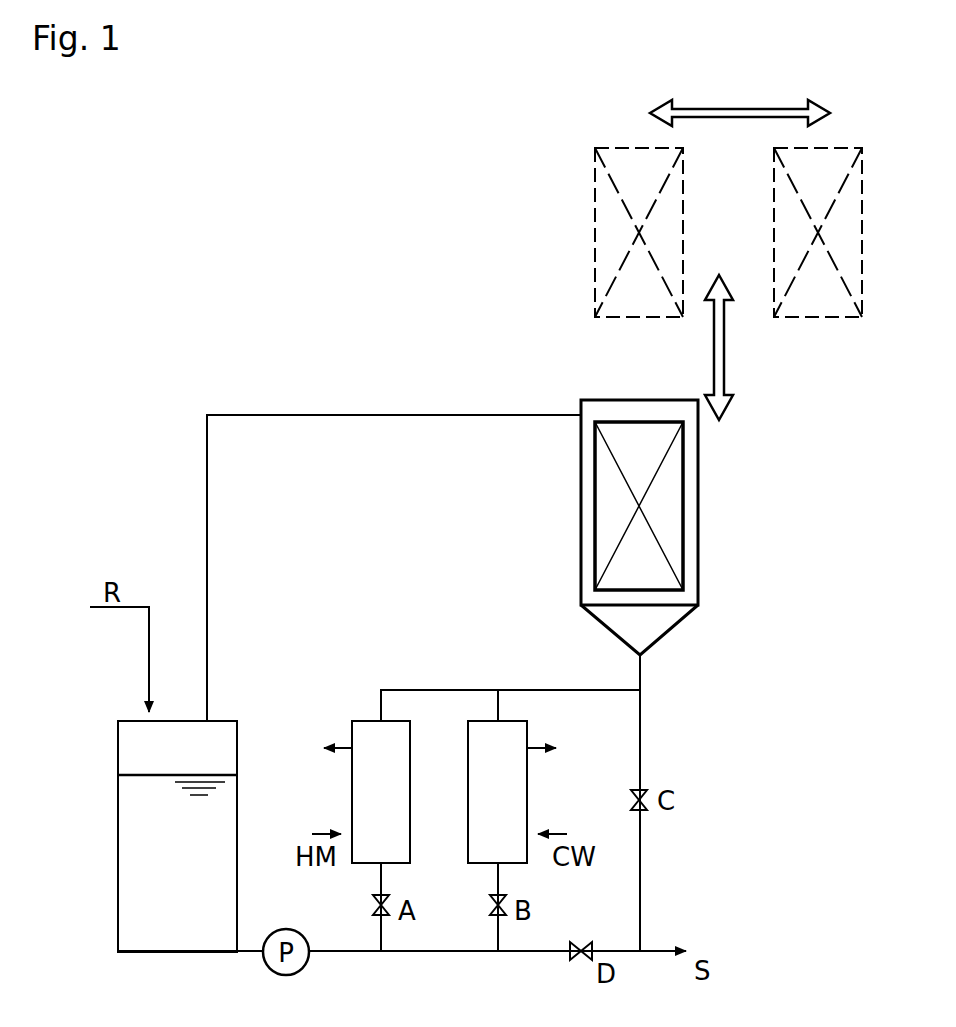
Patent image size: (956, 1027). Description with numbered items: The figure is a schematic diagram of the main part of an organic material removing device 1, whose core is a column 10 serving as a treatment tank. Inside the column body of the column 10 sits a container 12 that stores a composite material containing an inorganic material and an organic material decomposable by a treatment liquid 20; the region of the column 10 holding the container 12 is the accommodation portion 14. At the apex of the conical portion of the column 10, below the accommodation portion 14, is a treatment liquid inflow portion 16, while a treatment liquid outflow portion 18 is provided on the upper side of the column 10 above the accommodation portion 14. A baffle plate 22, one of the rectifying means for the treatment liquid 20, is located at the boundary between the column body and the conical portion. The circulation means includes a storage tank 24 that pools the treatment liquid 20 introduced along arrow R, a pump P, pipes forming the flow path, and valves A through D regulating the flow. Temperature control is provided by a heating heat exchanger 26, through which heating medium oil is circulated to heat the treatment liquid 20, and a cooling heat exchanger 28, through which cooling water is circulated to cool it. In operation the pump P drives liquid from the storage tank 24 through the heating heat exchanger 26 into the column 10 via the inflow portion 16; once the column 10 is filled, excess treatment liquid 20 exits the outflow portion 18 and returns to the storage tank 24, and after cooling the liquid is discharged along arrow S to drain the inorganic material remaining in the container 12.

The organic material removing device 1 is at (206, 238).
The column 10 is at (752, 537).
The container 12 is at (683, 472).
The accommodation portion 14 is at (708, 422).
The treatment liquid inflow portion 16 is at (645, 658).
The treatment liquid outflow portion 18 is at (592, 411).
The treatment liquid 20 is at (153, 800).
The baffle plate 22 is at (683, 617).
The storage tank 24 is at (237, 741).
The heating heat exchanger 26 is at (352, 790).
The cooling heat exchanger 28 is at (527, 790).